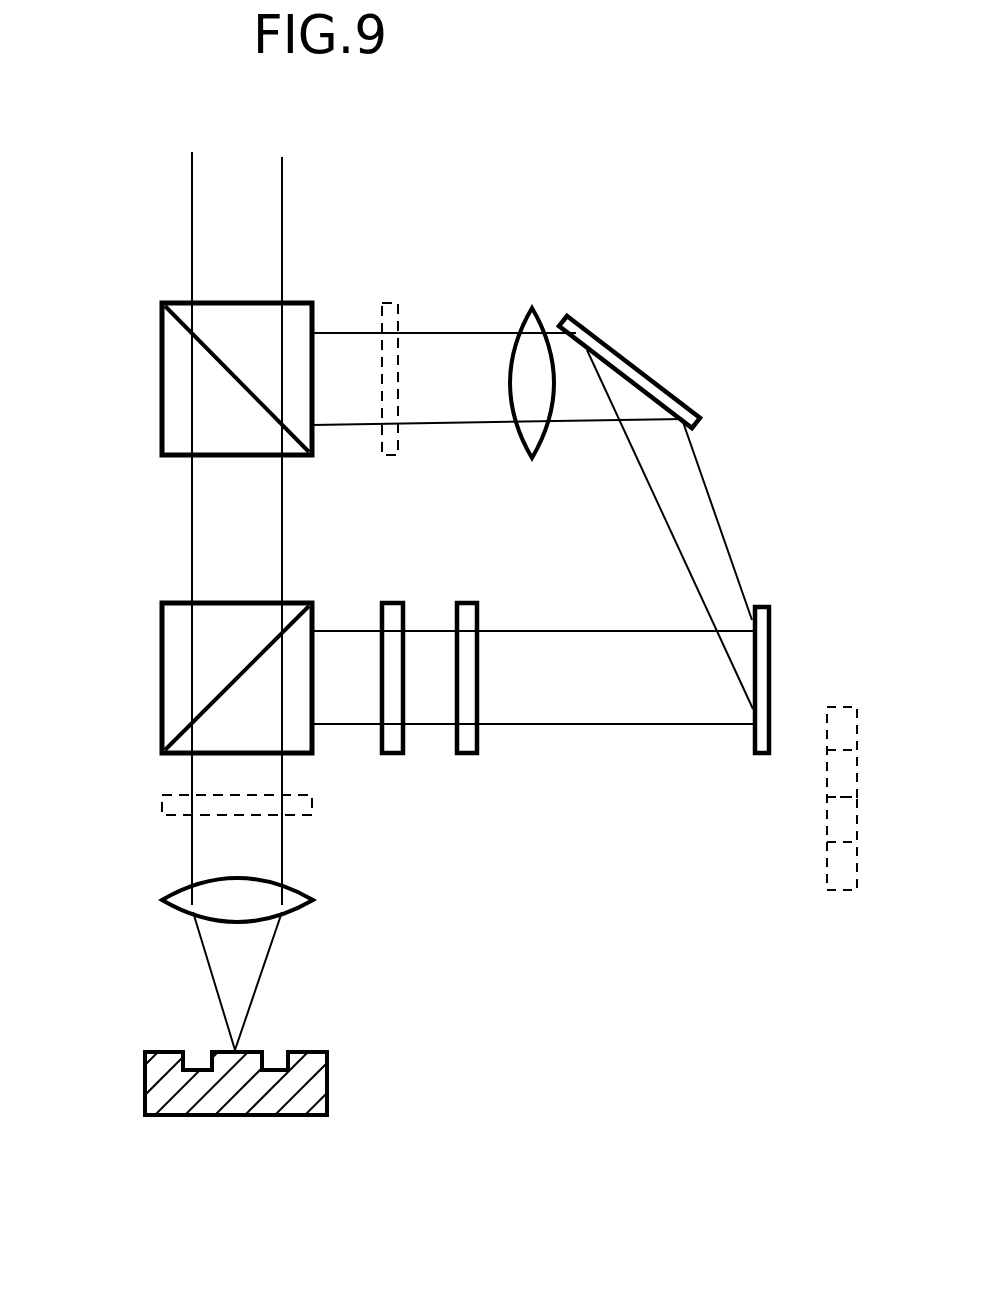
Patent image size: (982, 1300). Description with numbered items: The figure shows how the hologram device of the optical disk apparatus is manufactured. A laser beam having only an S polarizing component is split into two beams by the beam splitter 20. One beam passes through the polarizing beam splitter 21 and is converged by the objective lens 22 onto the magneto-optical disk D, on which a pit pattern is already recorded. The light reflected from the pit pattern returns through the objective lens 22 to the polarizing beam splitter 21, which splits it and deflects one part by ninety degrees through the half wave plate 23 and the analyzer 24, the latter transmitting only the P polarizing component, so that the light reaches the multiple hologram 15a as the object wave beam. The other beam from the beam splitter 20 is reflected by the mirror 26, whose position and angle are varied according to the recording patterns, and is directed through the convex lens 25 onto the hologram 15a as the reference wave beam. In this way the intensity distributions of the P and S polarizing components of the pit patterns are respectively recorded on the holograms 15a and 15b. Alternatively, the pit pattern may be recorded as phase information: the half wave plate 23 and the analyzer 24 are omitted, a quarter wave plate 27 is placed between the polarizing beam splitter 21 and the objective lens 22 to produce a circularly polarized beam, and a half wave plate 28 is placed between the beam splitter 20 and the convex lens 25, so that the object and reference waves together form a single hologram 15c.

The beam splitter 20 is at (162, 340).
The polarizing beam splitter 21 is at (162, 624).
The objective lens 22 is at (168, 905).
The half wave plate 23 is at (388, 757).
The analyzer 24 is at (465, 757).
The convex lens 25 is at (522, 312).
The mirror 26 is at (683, 402).
The quarter wave plate 27 is at (160, 798).
The half wave plate 28 is at (398, 303).
The multiple hologram 15a is at (752, 740).
The hologram 15b is at (773, 712).
The hologram 15c is at (773, 752).
The magneto-optical disk D is at (155, 1094).